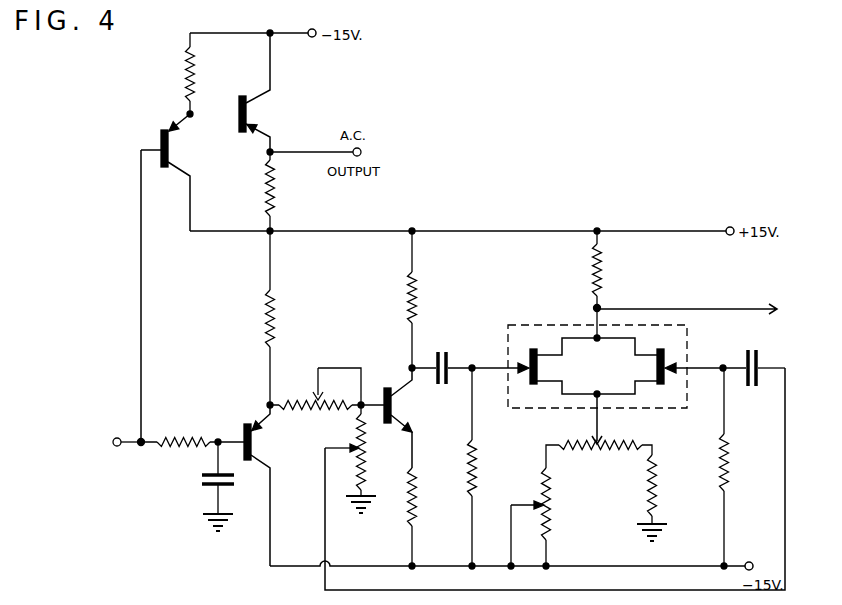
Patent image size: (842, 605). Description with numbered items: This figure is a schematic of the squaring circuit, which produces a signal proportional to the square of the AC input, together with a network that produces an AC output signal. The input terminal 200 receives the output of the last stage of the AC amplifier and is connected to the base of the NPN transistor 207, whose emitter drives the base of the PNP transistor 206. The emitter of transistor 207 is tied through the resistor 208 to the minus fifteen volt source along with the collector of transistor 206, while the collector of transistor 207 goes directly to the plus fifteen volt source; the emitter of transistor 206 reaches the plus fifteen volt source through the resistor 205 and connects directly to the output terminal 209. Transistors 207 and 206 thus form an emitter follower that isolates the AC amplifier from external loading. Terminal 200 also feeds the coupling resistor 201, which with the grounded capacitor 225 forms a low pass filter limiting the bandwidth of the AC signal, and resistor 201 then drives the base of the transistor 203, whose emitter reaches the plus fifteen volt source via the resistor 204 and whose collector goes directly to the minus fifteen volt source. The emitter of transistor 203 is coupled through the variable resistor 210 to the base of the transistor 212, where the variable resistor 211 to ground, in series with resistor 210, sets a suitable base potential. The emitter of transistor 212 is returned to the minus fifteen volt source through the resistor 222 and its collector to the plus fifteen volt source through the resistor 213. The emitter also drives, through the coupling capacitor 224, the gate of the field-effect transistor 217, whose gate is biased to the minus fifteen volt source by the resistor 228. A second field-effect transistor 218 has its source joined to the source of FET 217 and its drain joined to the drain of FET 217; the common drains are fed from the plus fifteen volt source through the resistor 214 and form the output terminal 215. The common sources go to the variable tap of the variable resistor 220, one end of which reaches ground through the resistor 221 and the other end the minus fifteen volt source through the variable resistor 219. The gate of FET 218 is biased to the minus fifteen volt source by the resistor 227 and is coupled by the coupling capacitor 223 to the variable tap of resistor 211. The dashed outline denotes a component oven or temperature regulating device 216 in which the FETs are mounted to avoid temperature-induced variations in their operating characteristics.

The input terminal 200 is at (114, 438).
The coupling resistor 201 is at (192, 432).
The transistor 203 is at (246, 428).
The resistor 204 is at (276, 325).
The resistor 205 is at (276, 189).
The PNP transistor 206 is at (240, 128).
The NPN transistor 207 is at (160, 142).
The resistor 208 is at (190, 77).
The output terminal 209 is at (362, 151).
The variable resistor 210 is at (322, 412).
The variable resistor 211 is at (364, 436).
The transistor 212 is at (386, 386).
The resistor 213 is at (418, 301).
The resistor 214 is at (603, 276).
The output terminal 215 is at (776, 307).
The component oven 216 is at (597, 344).
The field-effect transistor 217 is at (540, 367).
The field-effect transistor 218 is at (652, 368).
The variable resistor 219 is at (552, 507).
The variable resistor 220 is at (606, 443).
The resistor 221 is at (658, 477).
The resistor 222 is at (417, 494).
The coupling capacitor 223 is at (750, 349).
The coupling capacitor 224 is at (439, 350).
The capacitor 225 is at (203, 479).
The resistor 227 is at (730, 463).
The resistor 228 is at (477, 452).